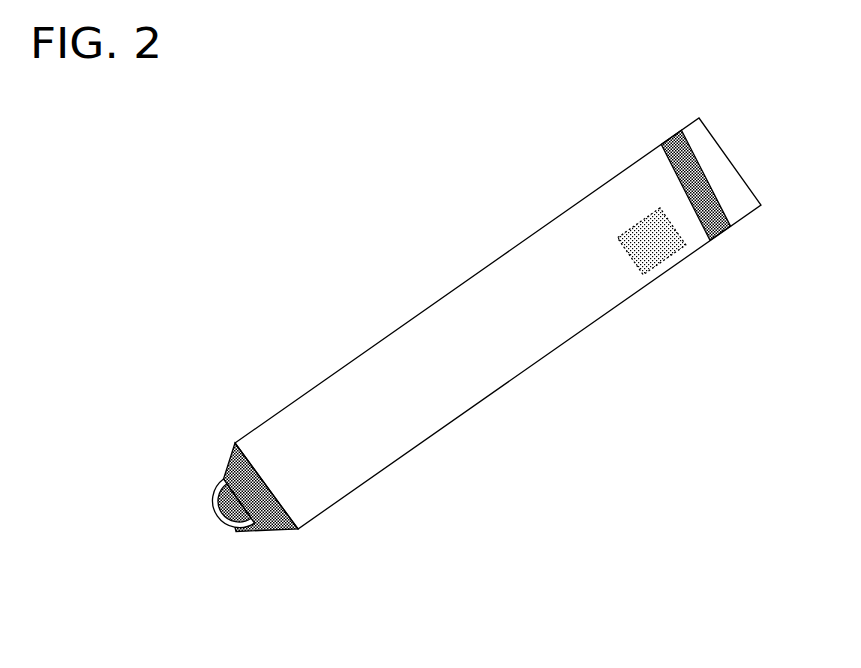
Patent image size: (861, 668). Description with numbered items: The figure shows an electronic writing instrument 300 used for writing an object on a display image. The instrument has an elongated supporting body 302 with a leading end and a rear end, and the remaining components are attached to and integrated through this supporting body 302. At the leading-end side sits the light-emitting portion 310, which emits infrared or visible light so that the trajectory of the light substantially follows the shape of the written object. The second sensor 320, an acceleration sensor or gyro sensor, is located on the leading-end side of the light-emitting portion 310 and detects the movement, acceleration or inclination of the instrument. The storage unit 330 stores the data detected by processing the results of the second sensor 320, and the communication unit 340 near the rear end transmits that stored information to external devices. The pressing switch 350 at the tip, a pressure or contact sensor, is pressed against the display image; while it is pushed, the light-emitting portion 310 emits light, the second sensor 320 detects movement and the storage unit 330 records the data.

The electronic writing instrument 300 is at (454, 358).
The supporting body 302 is at (432, 320).
The light-emitting portion 310 is at (188, 483).
The second sensor 320 is at (237, 533).
The storage unit 330 is at (665, 260).
The communication unit 340 is at (737, 227).
The pressing switch 350 is at (210, 508).